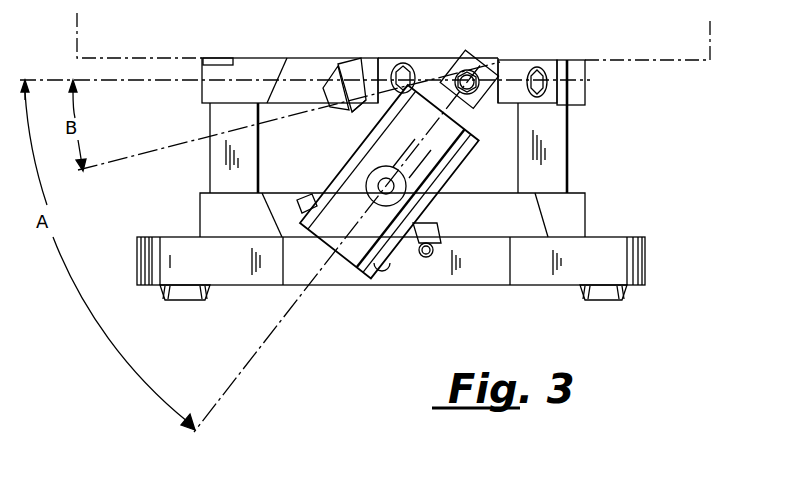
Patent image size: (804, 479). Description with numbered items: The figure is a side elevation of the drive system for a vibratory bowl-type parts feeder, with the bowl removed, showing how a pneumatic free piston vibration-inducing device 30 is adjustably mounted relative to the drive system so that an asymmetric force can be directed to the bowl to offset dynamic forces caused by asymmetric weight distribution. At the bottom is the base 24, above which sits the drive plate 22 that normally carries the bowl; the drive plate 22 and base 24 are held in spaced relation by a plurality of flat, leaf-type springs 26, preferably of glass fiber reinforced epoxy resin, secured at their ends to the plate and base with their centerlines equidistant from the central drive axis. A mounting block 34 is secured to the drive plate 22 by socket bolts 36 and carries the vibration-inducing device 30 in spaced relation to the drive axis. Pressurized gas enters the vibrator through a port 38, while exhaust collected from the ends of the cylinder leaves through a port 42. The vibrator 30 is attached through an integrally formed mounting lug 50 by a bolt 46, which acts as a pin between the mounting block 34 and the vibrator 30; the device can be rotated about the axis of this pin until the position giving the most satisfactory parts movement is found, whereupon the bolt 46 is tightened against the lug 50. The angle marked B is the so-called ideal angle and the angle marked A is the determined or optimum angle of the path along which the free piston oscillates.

The drive plate 22 is at (256, 68).
The base 24 is at (632, 258).
The springs 26 is at (210, 168).
The free piston vibration-inducing device 30 is at (345, 283).
The mounting block 34 is at (518, 65).
The socket bolts 36 is at (400, 63).
The port 38 is at (383, 205).
The port 42 is at (422, 258).
The bolt 46 is at (462, 70).
The mounting lug 50 is at (466, 120).